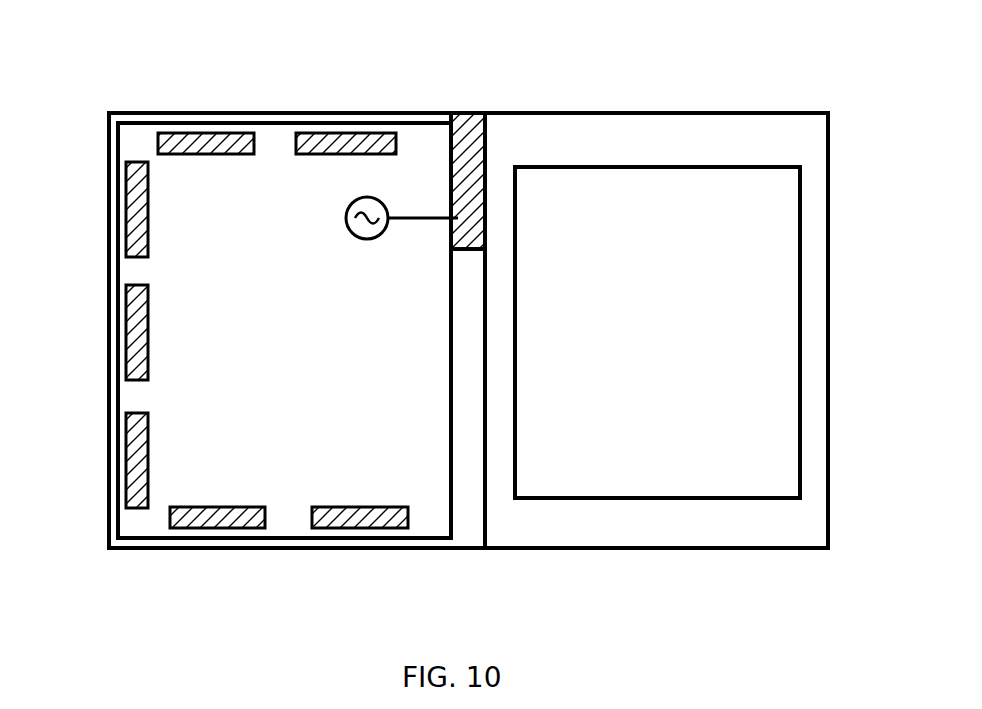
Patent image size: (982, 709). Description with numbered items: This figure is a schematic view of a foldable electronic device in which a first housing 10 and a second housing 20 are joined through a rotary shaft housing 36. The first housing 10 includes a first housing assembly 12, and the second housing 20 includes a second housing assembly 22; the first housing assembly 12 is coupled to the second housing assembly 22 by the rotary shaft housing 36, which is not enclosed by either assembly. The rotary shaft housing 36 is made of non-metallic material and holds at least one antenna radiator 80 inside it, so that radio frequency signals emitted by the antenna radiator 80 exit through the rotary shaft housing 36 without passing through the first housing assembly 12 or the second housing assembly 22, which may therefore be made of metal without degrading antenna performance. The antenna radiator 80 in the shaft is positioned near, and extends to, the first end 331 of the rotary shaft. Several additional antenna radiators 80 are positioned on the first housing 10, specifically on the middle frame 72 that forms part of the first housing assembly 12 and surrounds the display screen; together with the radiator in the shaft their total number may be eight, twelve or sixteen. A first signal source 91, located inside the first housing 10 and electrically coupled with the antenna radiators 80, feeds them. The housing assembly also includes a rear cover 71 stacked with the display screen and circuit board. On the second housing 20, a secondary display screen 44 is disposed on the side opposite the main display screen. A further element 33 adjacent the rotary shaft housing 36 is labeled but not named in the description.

The first housing 10 is at (230, 95).
The first housing assembly 12 is at (265, 550).
The second housing 20 is at (697, 93).
The second housing assembly 22 is at (710, 545).
The side wall of second housing 33 is at (487, 172).
The first end 331 is at (473, 108).
The rotary shaft housing 36 is at (467, 543).
The secondary display screen 44 is at (745, 218).
The rear cover 71 is at (235, 303).
The middle frame 72 is at (110, 183).
The antenna radiator 80 is at (188, 135).
The first signal source 91 is at (347, 216).